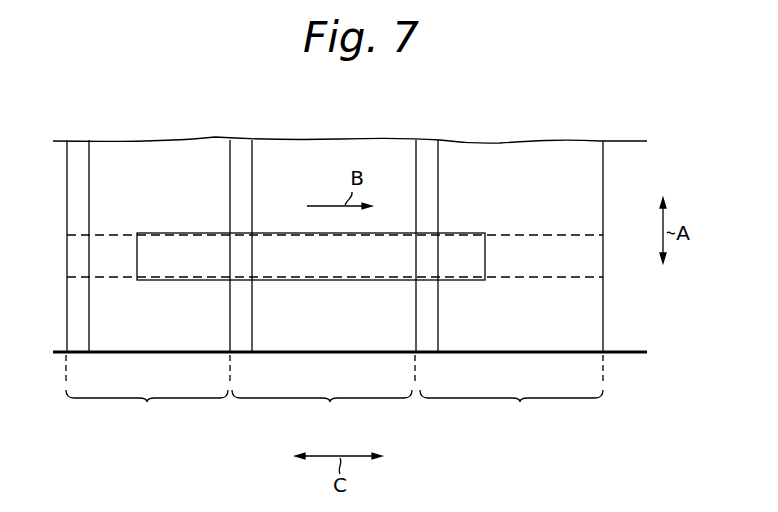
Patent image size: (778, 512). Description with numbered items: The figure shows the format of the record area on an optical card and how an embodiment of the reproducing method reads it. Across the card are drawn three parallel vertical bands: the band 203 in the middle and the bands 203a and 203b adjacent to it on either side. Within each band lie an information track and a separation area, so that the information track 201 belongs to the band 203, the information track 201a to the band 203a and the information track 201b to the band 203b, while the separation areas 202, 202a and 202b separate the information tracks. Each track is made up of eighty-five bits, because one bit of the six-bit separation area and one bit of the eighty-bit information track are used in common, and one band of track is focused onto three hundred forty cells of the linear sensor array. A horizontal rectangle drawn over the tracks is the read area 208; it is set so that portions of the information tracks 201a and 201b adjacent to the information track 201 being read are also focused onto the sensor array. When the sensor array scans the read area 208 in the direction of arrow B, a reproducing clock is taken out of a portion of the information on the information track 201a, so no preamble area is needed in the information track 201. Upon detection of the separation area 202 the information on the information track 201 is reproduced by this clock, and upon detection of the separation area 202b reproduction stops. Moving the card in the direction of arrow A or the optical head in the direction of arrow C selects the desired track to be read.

The information track 201 is at (338, 270).
The information track 201a is at (125, 271).
The information track 201b is at (536, 272).
The separation area 202 is at (243, 251).
The separation area 202a is at (80, 249).
The separation area 202b is at (438, 252).
The band 203 is at (323, 393).
The band 203a is at (148, 396).
The band 203b is at (511, 393).
The read area 208 is at (487, 252).